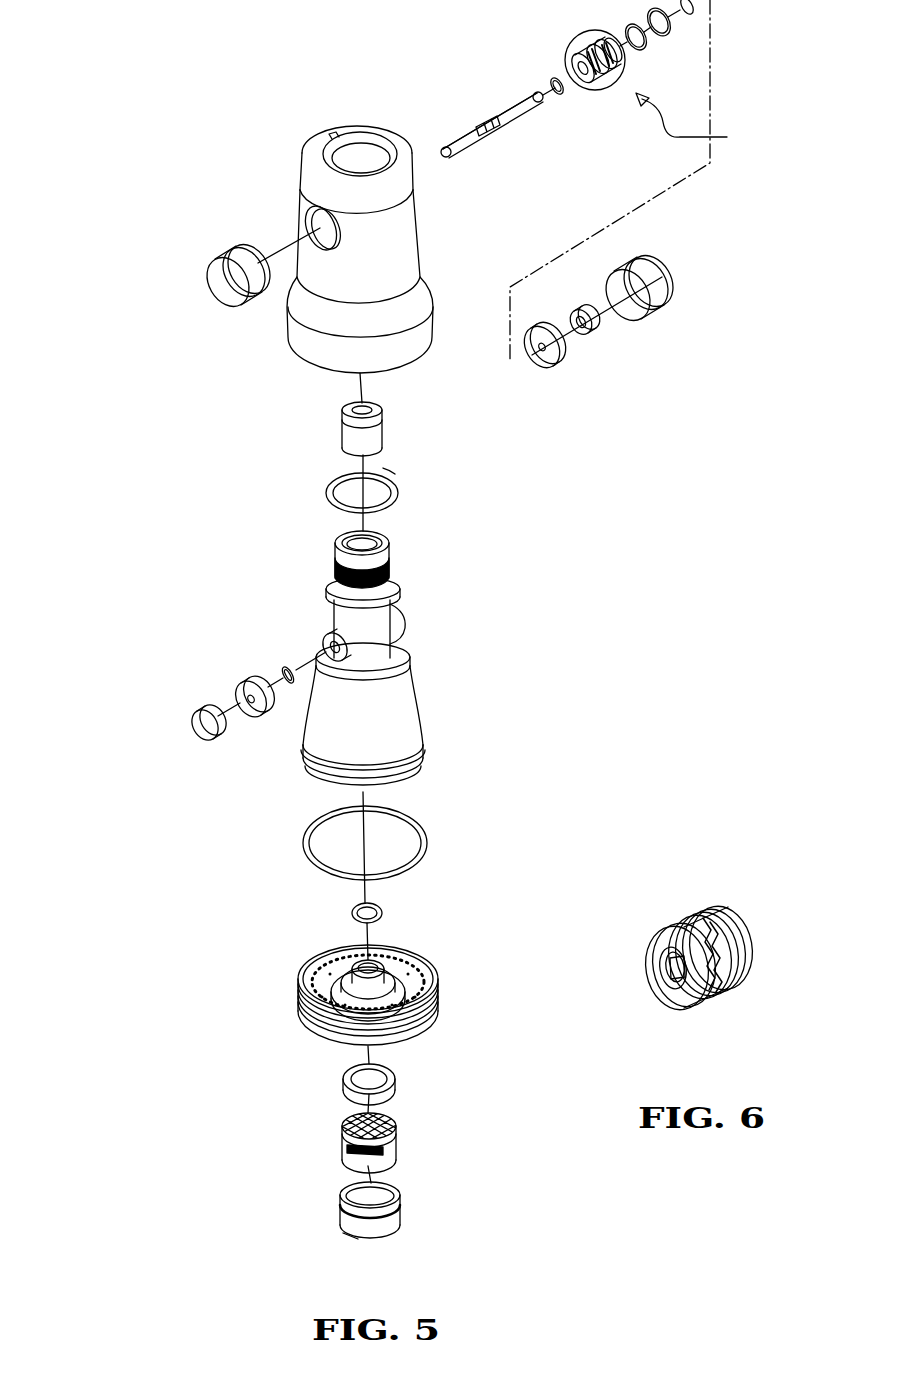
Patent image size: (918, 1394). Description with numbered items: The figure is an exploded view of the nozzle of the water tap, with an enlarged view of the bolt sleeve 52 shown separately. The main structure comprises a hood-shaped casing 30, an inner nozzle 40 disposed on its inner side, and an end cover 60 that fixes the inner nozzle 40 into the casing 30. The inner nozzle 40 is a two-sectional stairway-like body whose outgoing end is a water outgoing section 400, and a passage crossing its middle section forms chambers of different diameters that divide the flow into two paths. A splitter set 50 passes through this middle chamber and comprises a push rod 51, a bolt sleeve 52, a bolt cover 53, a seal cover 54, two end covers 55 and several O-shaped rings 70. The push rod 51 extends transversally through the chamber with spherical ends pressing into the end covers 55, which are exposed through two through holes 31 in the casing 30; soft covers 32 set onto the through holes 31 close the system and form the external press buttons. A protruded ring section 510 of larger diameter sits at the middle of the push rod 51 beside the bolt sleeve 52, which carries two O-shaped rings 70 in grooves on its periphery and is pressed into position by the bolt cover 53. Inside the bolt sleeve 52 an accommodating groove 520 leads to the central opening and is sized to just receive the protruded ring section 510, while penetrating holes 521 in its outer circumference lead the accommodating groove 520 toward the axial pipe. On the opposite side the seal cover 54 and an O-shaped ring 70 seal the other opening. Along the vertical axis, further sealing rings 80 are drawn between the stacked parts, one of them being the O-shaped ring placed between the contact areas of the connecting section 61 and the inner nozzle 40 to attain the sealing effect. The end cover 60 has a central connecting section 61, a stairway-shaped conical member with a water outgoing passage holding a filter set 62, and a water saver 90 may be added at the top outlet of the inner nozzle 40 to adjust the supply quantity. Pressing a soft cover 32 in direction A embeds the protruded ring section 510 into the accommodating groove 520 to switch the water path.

In FIG. 5, the casing 30 is at (312, 172).
In FIG. 5, the through holes 31 is at (318, 222).
In FIG. 5, the soft cover 32 is at (205, 292).
In FIG. 5, the protruded ring section 510 is at (482, 113).
In FIG. 5, the push rod 51 is at (507, 123).
In FIG. 5, the O-shaped ring 70 is at (557, 95).
In FIG. 5, the direction A is at (600, 92).
In FIG. 5, the splitter set 50 is at (700, 123).
In FIG. 5, the bolt cover 53 is at (540, 352).
In FIG. 5, the end covers 55 is at (590, 325).
In FIG. 5, the water saver 90 is at (352, 432).
In FIG. 5, the O-ring 80 is at (398, 490).
In FIG. 5, the inner nozzle 40 is at (385, 658).
In FIG. 5, the water outgoing section 400 is at (405, 722).
In FIG. 5, the seal cover 54 is at (252, 712).
In FIG. 5, the end cover 60 is at (347, 991).
In FIG. 5, the connecting section 61 is at (392, 970).
In FIG. 5, the filter set 62 is at (320, 1128).
In FIG. 6, the bolt sleeve 52 is at (688, 906).
In FIG. 6, the accommodating groove 520 is at (668, 972).
In FIG. 6, the penetrating holes 521 is at (742, 936).